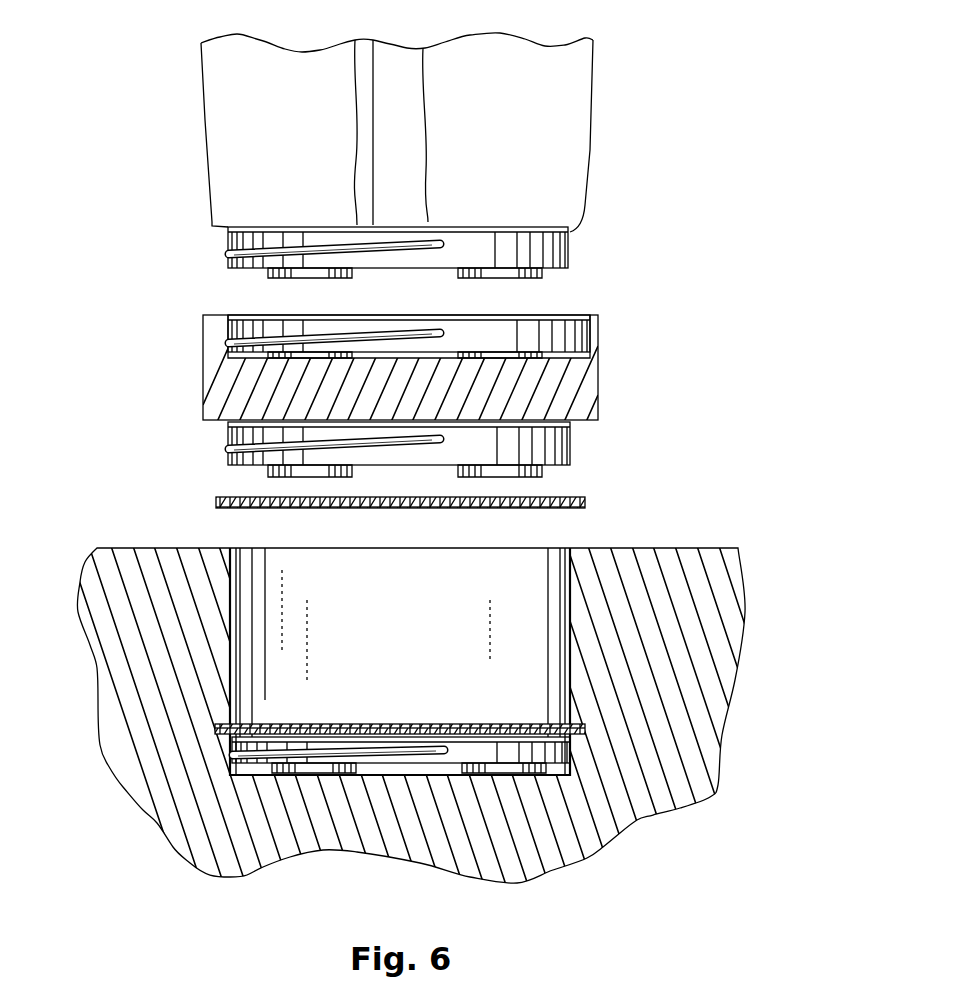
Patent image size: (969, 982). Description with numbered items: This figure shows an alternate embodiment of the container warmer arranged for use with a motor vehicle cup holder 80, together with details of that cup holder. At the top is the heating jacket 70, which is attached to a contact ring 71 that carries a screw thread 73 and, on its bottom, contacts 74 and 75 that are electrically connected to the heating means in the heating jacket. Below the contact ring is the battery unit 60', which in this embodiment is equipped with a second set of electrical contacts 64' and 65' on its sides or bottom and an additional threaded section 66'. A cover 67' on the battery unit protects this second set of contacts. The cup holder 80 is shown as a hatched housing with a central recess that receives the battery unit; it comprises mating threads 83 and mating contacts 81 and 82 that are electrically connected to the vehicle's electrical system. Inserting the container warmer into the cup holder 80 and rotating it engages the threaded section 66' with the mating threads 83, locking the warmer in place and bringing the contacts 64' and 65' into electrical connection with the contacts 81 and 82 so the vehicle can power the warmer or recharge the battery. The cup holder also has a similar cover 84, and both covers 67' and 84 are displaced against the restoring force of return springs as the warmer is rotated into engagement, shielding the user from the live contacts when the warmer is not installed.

The heating jacket 70 is at (600, 118).
The contact ring 71 is at (228, 236).
The screw thread 73 is at (228, 252).
The contact 74 is at (268, 279).
The contact 75 is at (522, 278).
The battery unit 60' is at (369, 366).
The threaded section 66' is at (449, 437).
The electrical contact 64' is at (258, 474).
The electrical contact 65' is at (553, 474).
The cover 67' is at (439, 517).
The motor vehicle cup holder 80 is at (85, 583).
The cover 84 is at (256, 723).
The mating threads 83 is at (230, 752).
The mating contact 81 is at (312, 773).
The mating contact 82 is at (517, 778).